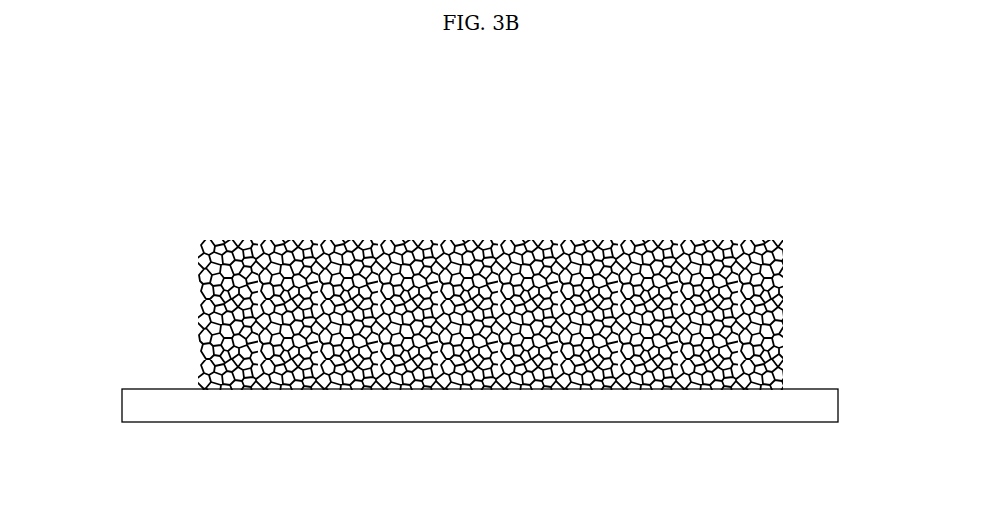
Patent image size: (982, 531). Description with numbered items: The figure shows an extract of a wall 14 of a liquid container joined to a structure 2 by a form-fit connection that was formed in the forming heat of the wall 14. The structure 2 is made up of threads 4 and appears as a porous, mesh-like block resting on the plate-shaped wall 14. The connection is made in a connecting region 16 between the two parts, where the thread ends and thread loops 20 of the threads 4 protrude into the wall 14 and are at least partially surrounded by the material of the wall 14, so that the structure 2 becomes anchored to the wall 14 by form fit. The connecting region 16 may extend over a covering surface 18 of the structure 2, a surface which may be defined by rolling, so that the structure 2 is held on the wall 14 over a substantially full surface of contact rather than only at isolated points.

The structure 2 is at (833, 203).
The threads 4 is at (767, 315).
The wall 14 is at (802, 395).
The connecting region 16 is at (238, 395).
The covering surface 18 is at (540, 240).
The thread loops 20 is at (580, 390).